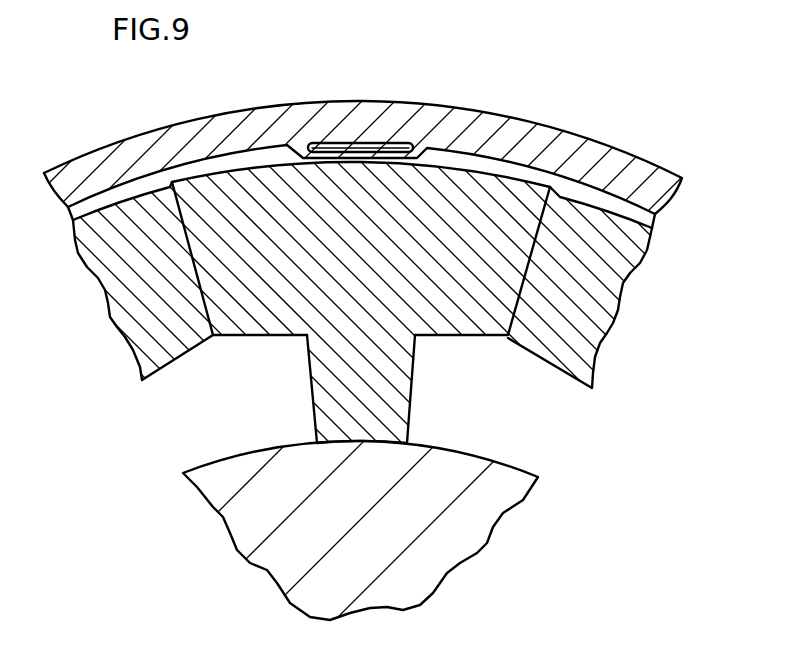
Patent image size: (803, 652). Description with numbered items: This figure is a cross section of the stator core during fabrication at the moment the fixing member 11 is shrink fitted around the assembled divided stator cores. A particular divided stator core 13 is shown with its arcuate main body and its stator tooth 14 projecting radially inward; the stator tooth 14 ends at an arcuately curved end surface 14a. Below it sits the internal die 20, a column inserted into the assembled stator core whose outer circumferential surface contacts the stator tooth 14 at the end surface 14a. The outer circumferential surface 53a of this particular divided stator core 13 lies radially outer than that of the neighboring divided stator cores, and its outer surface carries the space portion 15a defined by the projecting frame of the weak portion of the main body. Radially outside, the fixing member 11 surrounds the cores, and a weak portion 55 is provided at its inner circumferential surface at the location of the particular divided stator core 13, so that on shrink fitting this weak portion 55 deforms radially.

The fixing member 11 is at (255, 125).
The outer circumferential surface 53a is at (219, 178).
The weak portion 55 is at (364, 142).
The space portion 15a is at (373, 143).
The divided stator core 13 is at (470, 207).
The stator tooth 14 is at (414, 365).
The end surface 14a is at (377, 441).
The internal die 20 is at (473, 482).